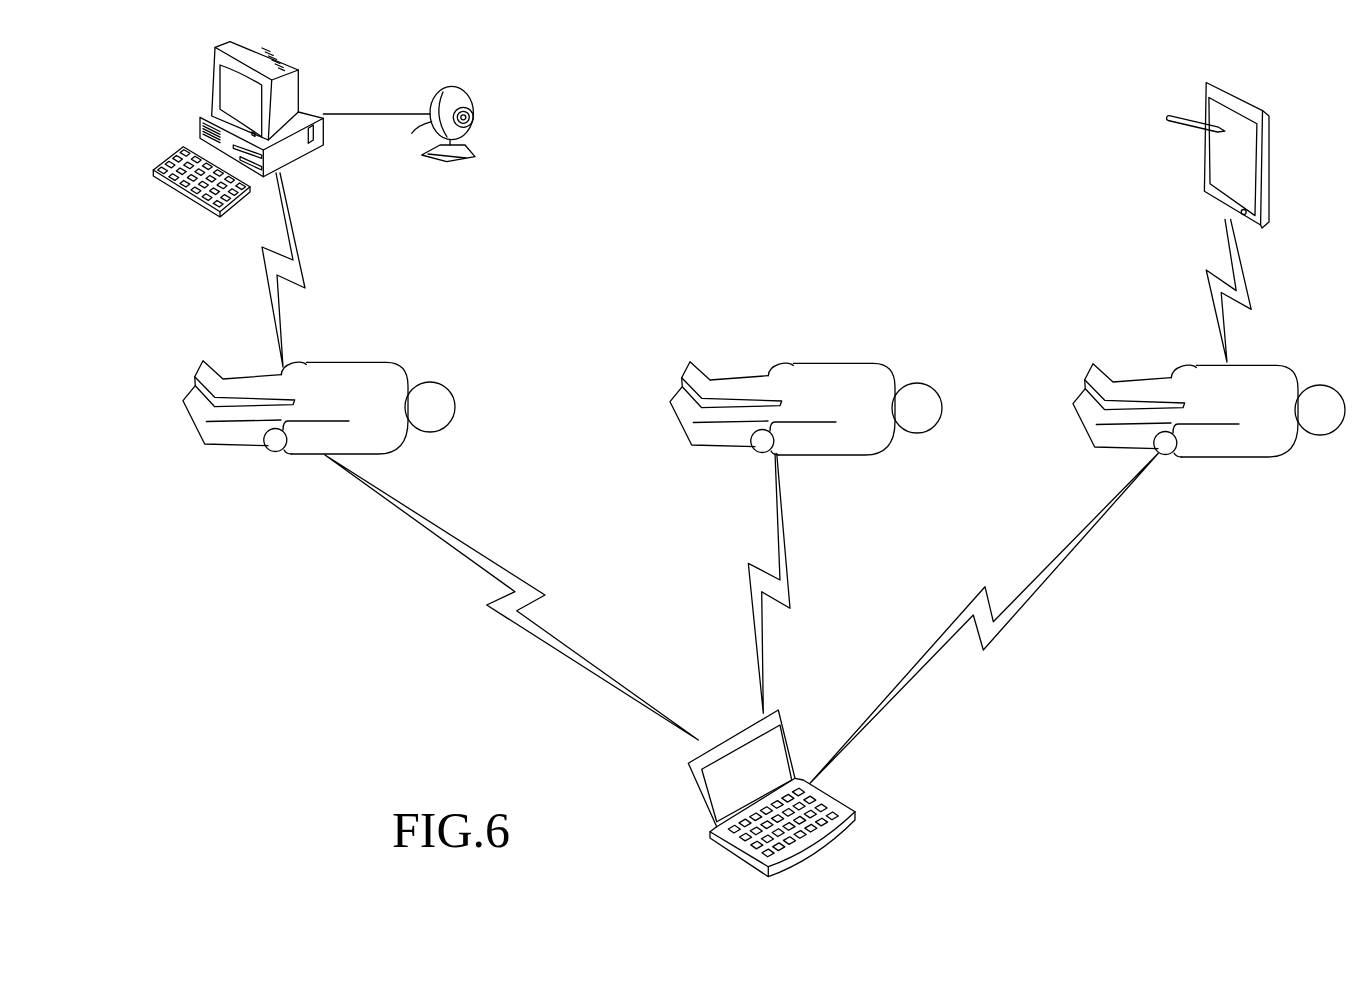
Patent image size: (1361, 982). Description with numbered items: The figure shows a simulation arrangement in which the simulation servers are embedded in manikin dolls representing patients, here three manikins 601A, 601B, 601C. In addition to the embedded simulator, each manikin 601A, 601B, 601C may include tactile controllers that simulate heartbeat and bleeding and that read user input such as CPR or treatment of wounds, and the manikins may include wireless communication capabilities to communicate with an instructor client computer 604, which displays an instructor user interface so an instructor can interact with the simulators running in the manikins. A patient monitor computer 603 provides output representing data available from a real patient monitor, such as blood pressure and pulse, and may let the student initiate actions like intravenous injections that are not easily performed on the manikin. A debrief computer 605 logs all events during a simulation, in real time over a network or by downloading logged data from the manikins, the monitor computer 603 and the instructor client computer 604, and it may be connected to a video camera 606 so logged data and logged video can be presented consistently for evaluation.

The manikin 601A is at (370, 387).
The manikin 601B is at (827, 387).
The manikin 601C is at (1261, 437).
The patient monitor computer 603 is at (1214, 165).
The instructor client computer 604 is at (832, 837).
The debrief computer 605 is at (199, 127).
The video camera 606 is at (468, 160).